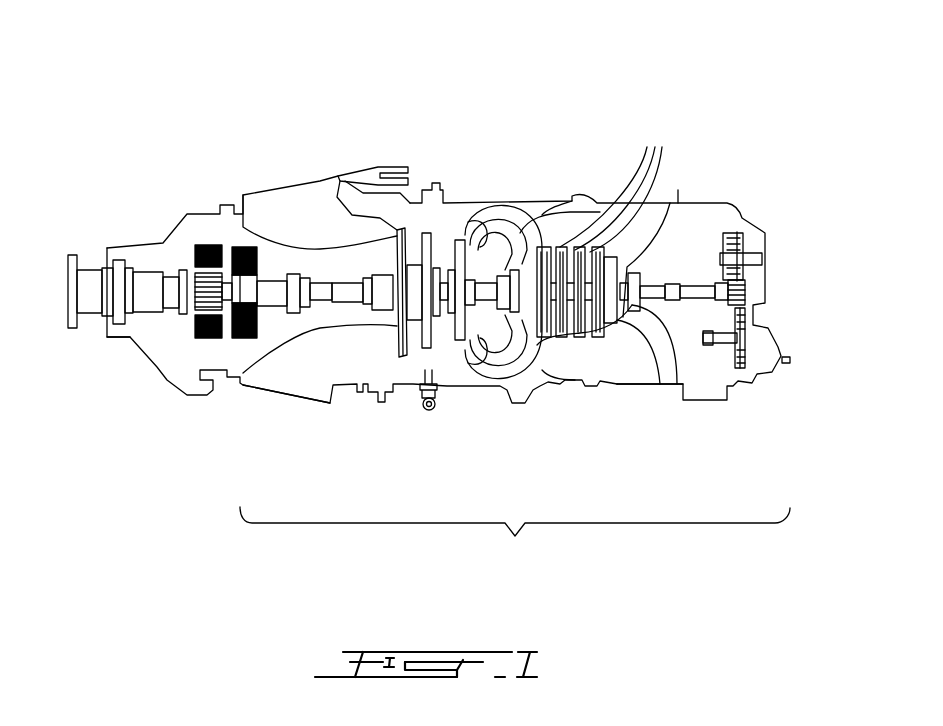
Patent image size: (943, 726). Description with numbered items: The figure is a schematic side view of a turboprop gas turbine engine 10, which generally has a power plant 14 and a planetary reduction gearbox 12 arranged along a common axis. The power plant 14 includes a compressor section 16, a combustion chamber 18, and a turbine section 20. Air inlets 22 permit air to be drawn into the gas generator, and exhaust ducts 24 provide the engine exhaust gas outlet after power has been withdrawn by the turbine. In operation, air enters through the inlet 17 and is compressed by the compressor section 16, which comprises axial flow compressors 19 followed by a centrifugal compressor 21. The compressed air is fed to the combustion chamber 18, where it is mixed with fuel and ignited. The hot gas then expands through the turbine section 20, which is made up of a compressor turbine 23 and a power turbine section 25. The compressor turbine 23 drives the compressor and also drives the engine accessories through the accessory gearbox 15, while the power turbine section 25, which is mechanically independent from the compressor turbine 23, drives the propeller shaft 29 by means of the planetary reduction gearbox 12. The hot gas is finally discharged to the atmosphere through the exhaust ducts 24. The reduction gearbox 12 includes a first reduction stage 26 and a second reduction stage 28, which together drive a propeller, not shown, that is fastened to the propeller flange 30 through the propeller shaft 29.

The turboprop gas turbine engine 10 is at (763, 190).
The reduction gearbox 12 is at (163, 380).
The power plant 14 is at (515, 539).
The accessory gearbox 15 is at (763, 373).
The compressor section 16 is at (548, 210).
The inlet 17 is at (653, 373).
The combustion chamber 18 is at (482, 225).
The axial flow compressors 19 is at (616, 187).
The turbine section 20 is at (441, 241).
The centrifugal compressor 21 is at (520, 217).
The air inlets 22 is at (653, 225).
The compressor turbine 23 is at (467, 236).
The exhaust ducts 24 is at (288, 372).
The power turbine section 25 is at (410, 222).
The first reduction stage 26 is at (232, 247).
The second reduction stage 28 is at (205, 245).
The propeller shaft 29 is at (105, 280).
The propeller flange 30 is at (72, 283).